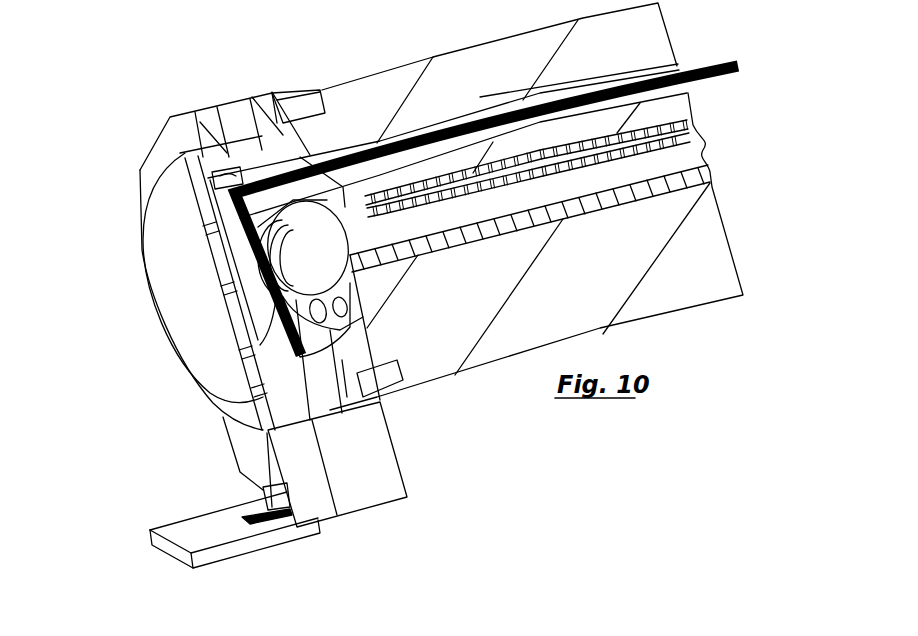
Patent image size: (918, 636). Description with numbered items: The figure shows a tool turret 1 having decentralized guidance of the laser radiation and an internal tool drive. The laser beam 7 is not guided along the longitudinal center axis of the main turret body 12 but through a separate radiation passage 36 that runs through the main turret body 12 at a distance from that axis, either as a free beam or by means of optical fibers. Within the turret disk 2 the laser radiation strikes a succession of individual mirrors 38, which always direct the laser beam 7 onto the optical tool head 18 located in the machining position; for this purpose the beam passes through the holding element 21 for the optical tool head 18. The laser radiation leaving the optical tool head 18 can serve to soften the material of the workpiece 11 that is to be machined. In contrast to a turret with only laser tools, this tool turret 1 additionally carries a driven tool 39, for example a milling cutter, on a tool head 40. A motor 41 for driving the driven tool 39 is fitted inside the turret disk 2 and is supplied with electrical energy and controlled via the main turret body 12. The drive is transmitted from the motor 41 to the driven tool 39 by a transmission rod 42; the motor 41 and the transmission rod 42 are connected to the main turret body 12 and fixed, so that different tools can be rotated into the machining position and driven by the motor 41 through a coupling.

The tool turret 1 is at (124, 127).
The turret disk 2 is at (263, 103).
The laser beam 7 is at (716, 77).
The workpiece 11 is at (220, 537).
The main turret body 12 is at (713, 273).
The optical tool head 18 is at (380, 472).
The holding element 21 is at (317, 390).
The radiation passage 36 is at (662, 73).
The mirror 38 is at (222, 178).
The driven tool 39 is at (267, 497).
The tool head 40 is at (247, 452).
The motor 41 is at (298, 242).
The transmission rod 42 is at (275, 315).